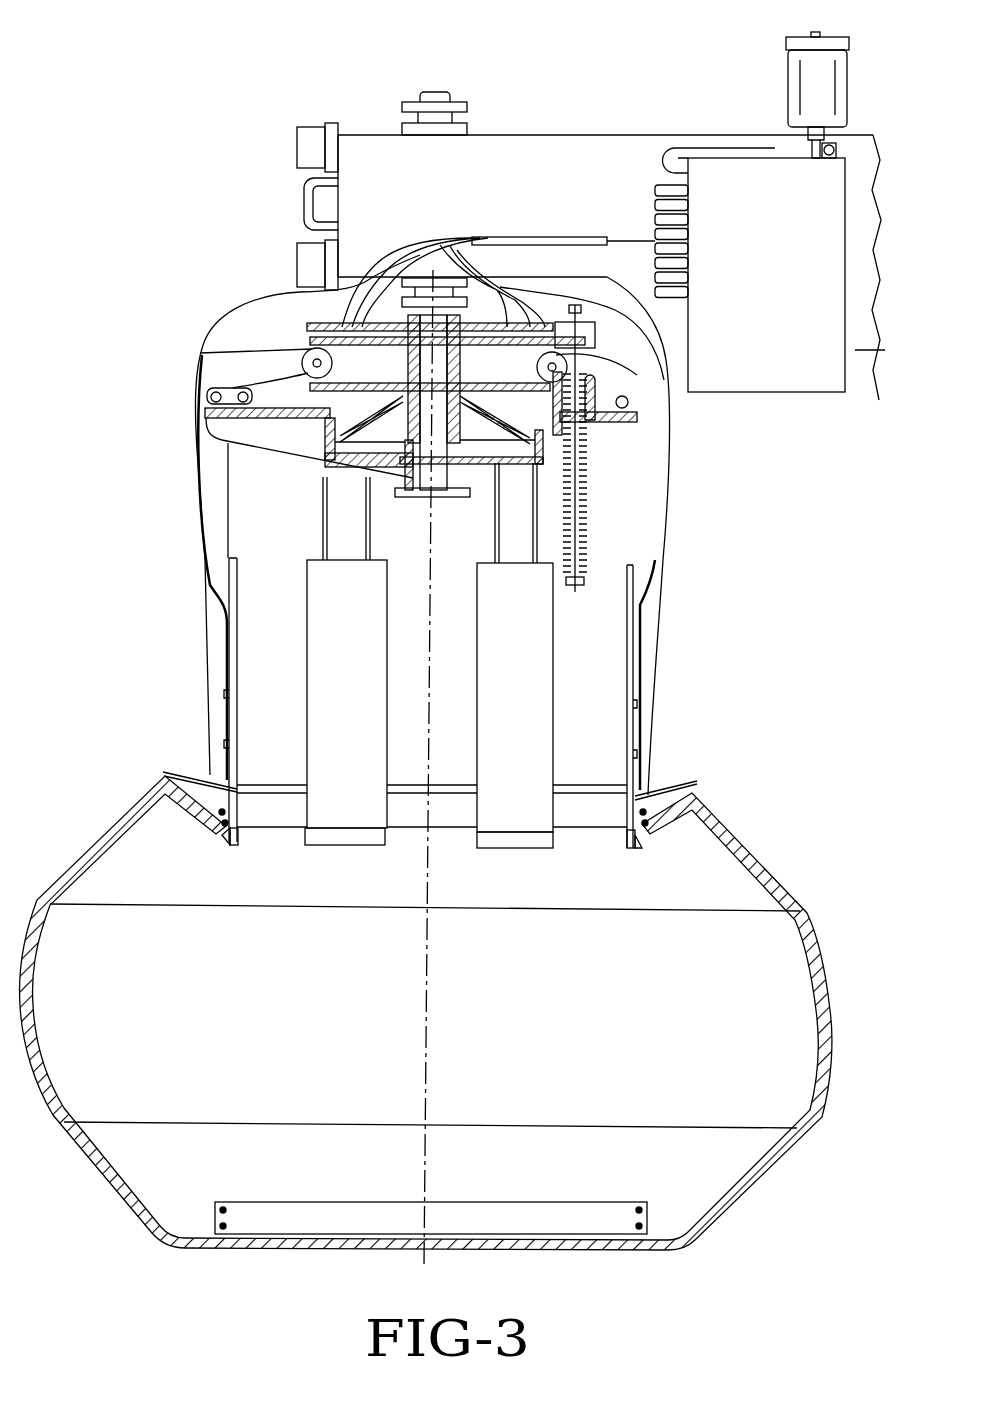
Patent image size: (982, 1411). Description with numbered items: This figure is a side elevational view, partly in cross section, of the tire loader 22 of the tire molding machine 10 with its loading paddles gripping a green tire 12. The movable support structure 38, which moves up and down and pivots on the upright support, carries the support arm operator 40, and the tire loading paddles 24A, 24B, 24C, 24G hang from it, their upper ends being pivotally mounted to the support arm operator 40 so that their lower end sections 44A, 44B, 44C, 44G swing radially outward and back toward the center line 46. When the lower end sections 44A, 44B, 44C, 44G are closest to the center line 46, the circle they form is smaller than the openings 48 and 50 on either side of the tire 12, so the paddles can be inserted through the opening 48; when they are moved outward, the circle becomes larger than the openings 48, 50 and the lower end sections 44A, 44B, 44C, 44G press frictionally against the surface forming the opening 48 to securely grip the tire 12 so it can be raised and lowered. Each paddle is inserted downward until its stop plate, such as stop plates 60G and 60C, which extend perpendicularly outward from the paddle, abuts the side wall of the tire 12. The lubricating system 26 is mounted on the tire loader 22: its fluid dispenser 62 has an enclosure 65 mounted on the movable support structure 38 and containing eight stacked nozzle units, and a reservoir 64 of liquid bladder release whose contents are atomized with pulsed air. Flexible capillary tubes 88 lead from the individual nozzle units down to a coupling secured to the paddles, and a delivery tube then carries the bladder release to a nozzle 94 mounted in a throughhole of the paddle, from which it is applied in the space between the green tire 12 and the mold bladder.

The tire molding machine 10 is at (494, 78).
The green tire 12 is at (426, 1013).
The tire loader 22 is at (242, 238).
The tire loading paddle 24A is at (338, 672).
The tire loading paddle 24B is at (523, 675).
The tire loading paddle 24C is at (634, 672).
The tire loading paddle 24G is at (228, 665).
The lubricating system 26 is at (632, 160).
The movable support structure 38 is at (543, 165).
The support arm operator 40 is at (275, 325).
The lower end section 44A is at (343, 838).
The lower end section 44B is at (515, 842).
The lower end section 44C is at (640, 372).
The lower end section 44G is at (233, 368).
The center line 46 is at (434, 1052).
The opening 48 is at (652, 820).
The opening 50 is at (228, 1205).
The stop plate 60C is at (690, 782).
The stop plate 60G is at (170, 775).
The fluid dispenser 62 is at (785, 284).
The reservoir 64 is at (810, 70).
The enclosure 65 is at (730, 185).
The flexible capillary tubes 88 is at (210, 551).
The nozzle 94 is at (345, 790).